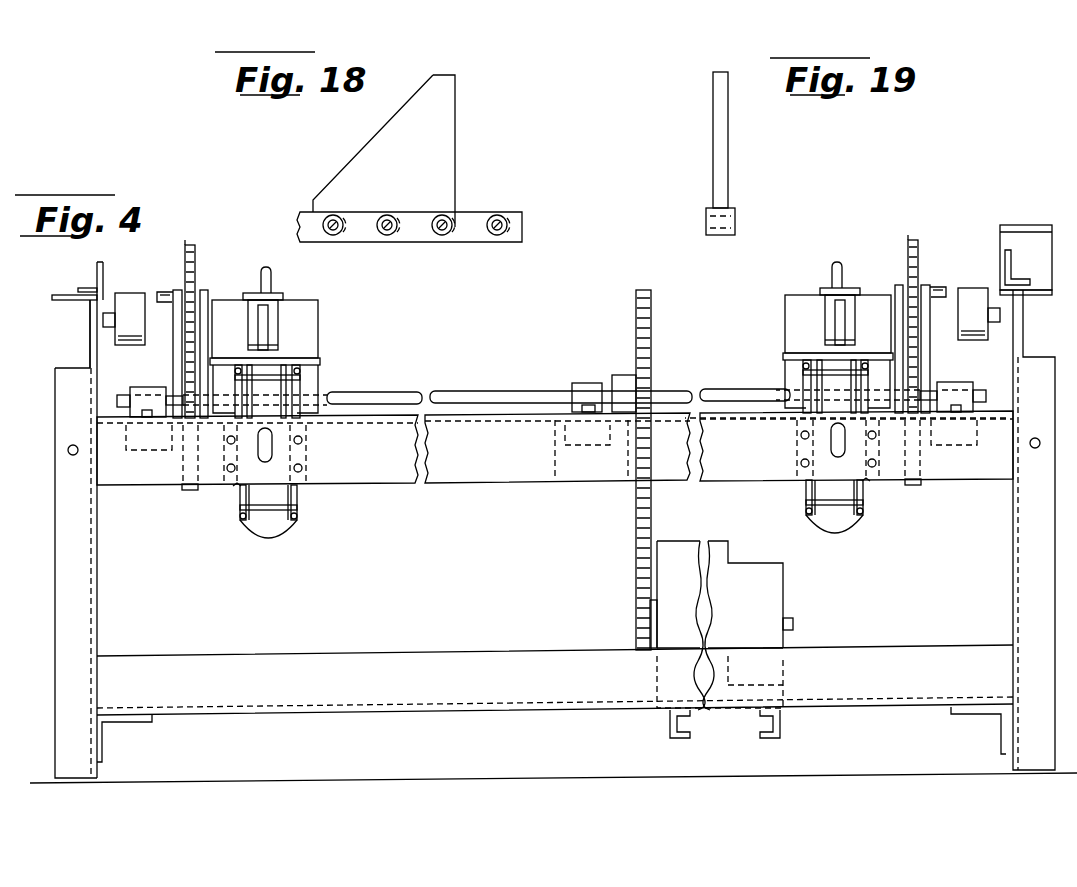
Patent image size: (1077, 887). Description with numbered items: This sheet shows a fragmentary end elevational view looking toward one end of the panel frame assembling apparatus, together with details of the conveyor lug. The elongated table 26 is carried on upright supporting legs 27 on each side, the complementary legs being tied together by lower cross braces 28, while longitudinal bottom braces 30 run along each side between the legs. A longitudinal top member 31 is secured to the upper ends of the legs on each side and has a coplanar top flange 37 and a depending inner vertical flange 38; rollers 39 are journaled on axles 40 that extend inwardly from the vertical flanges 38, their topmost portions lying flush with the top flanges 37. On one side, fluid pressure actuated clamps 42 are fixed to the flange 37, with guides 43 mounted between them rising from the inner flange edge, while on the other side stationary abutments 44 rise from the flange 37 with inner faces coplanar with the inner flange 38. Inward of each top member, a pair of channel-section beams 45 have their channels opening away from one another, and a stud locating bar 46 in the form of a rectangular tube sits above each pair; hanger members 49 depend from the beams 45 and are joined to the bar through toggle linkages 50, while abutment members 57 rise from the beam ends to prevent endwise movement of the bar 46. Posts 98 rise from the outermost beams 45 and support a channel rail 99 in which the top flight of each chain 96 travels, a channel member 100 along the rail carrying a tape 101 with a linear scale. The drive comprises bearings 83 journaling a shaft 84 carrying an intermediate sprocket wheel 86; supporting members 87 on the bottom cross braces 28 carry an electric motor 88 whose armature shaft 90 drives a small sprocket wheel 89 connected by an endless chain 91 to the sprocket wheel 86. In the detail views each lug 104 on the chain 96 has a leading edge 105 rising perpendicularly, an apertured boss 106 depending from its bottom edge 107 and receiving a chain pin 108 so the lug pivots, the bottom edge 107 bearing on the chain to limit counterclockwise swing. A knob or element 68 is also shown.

In FIG. 4, the table 26 is at (984, 750).
In FIG. 4, the upright supporting legs 27 is at (88, 600).
In FIG. 4, the lower cross braces 28 is at (878, 648).
In FIG. 4, the longitudinal bottom braces 30 is at (145, 724).
In FIG. 4, the longitudinal top member 31 is at (91, 312).
In FIG. 4, the top flange 37 is at (55, 298).
In FIG. 4, the inner vertical flange 38 is at (103, 370).
In FIG. 4, the rollers 39 is at (116, 393).
In FIG. 4, the axles 40 is at (992, 342).
In FIG. 4, the fluid pressure actuated clamps 42 is at (1024, 221).
In FIG. 4, the guides 43 is at (1012, 268).
In FIG. 4, the stationary abutments 44 is at (97, 276).
In FIG. 4, the beams 45 is at (312, 380).
In FIG. 4, the stud locating bar 46 is at (283, 296).
In FIG. 4, the hanger members 49 is at (551, 518).
In FIG. 4, the toggle linkages 50 is at (235, 495).
In FIG. 4, the abutment members 57 is at (318, 334).
In FIG. 4, the adjustment knob 68 is at (266, 268).
In FIG. 4, the bearing 83 is at (585, 383).
In FIG. 4, the shaft 84 is at (500, 390).
In FIG. 4, the intermediate sprocket wheel 86 is at (651, 376).
In FIG. 4, the supporting members 87 is at (760, 738).
In FIG. 4, the electric motor 88 is at (735, 565).
In FIG. 4, the small sprocket wheel 89 is at (658, 636).
In FIG. 4, the armature shaft 90 is at (795, 624).
In FIG. 4, the endless chain 91 is at (655, 536).
In FIG. 4, the chains 96 is at (196, 283).
In FIG. 18, the chains 96 is at (515, 242).
In FIG. 4, the posts 98 is at (124, 346).
In FIG. 4, the rail 99 is at (206, 291).
In FIG. 4, the channel member 100 is at (160, 294).
In FIG. 4, the tape 101 is at (170, 290).
In FIG. 4, the lugs 104 is at (194, 236).
In FIG. 18, the lugs 104 is at (390, 146).
In FIG. 19, the lugs 104 is at (712, 134).
In FIG. 18, the leading edge 105 is at (455, 175).
In FIG. 19, the leading edge 105 is at (726, 165).
In FIG. 18, the apertured boss 106 is at (457, 225).
In FIG. 19, the apertured boss 106 is at (722, 235).
In FIG. 18, the bottom edge 107 is at (385, 240).
In FIG. 18, the chain pin 108 is at (446, 236).